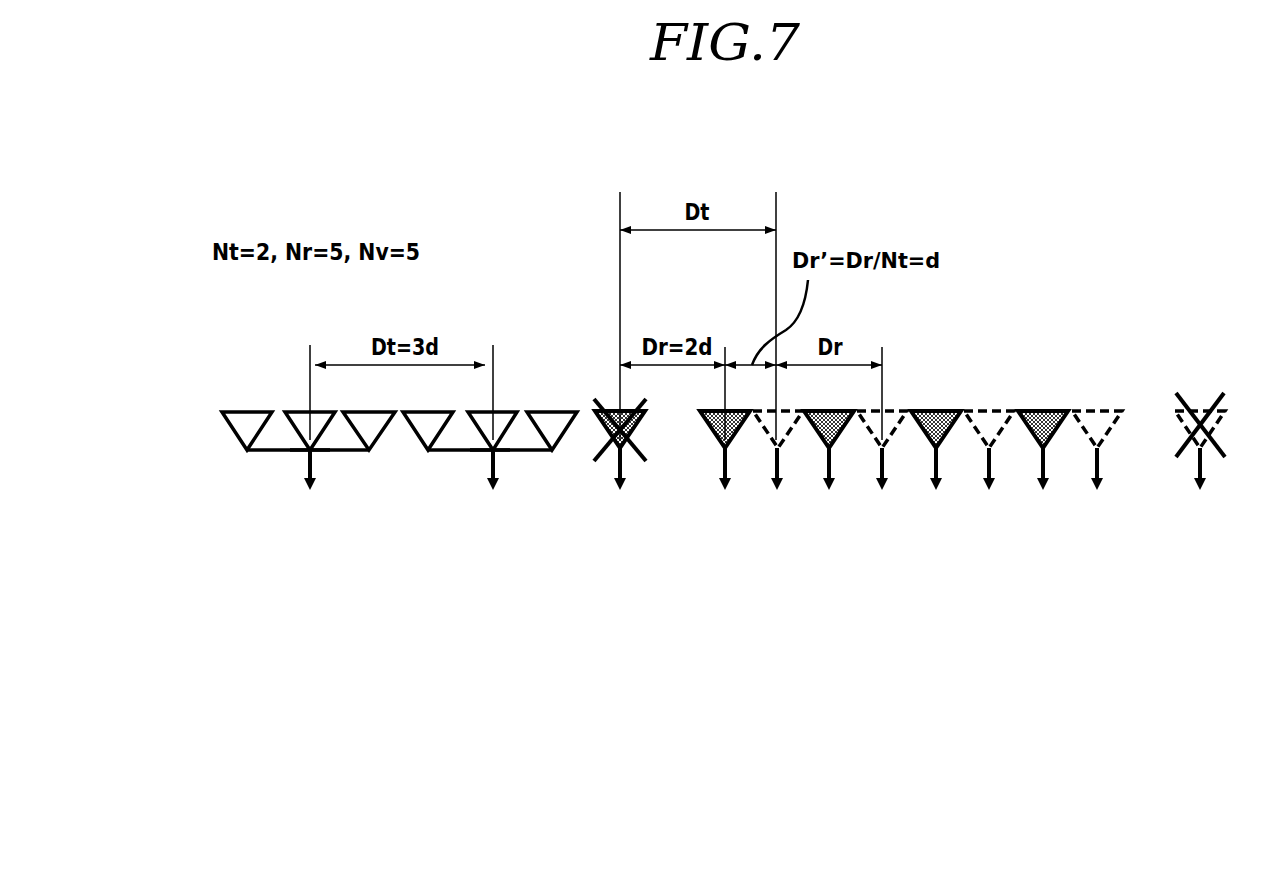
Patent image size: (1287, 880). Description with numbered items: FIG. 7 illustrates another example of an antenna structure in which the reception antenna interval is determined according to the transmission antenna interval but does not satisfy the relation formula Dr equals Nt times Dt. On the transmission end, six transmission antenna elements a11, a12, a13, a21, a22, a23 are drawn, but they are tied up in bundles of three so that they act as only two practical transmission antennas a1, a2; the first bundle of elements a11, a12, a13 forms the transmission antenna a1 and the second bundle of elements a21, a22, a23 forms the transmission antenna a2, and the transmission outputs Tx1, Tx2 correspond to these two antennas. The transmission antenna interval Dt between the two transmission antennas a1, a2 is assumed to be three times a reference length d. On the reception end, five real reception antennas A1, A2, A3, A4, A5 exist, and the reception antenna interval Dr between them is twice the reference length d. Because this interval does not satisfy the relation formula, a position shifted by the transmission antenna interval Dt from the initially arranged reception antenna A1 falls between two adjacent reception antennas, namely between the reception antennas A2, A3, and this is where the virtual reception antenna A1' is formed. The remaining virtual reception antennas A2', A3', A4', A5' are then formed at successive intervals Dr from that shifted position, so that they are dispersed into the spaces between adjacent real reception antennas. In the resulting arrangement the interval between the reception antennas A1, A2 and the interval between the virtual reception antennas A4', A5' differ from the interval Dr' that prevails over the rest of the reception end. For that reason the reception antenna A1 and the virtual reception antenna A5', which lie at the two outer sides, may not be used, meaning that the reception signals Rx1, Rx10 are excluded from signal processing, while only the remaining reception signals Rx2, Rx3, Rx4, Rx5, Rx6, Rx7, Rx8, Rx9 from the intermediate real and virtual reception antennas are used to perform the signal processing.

The transmission antenna element a11 is at (247, 415).
The transmission antenna element a12 is at (310, 415).
The transmission antenna element a13 is at (369, 415).
The transmission antenna element a21 is at (428, 415).
The transmission antenna element a22 is at (492, 415).
The transmission antenna element a23 is at (552, 415).
The transmission antenna a1 is at (306, 461).
The transmission antenna a2 is at (485, 461).
The first transmit channel Tx1 is at (308, 432).
The second transmit channel Tx2 is at (490, 432).
The reception antenna A1 is at (620, 421).
The reception antenna A2 is at (725, 414).
The reception antenna A3 is at (829, 414).
The reception antenna A4 is at (936, 414).
The reception antenna A5 is at (1043, 414).
The virtual reception antenna A1' is at (778, 414).
The virtual reception antenna A2' is at (882, 413).
The virtual reception antenna A3' is at (989, 413).
The virtual reception antenna A4' is at (1097, 413).
The virtual reception antenna A5' is at (1200, 418).
The reception signal Rx1 is at (624, 483).
The second receive channel Rx2 is at (730, 483).
The third receive channel Rx3 is at (779, 483).
The fourth receive channel Rx4 is at (828, 483).
The fifth receive channel Rx5 is at (876, 483).
The sixth receive channel Rx6 is at (934, 483).
The seventh receive channel Rx7 is at (990, 483).
The eighth receive channel Rx8 is at (1040, 483).
The ninth receive channel Rx9 is at (1096, 483).
The reception signal Rx10 is at (1196, 483).